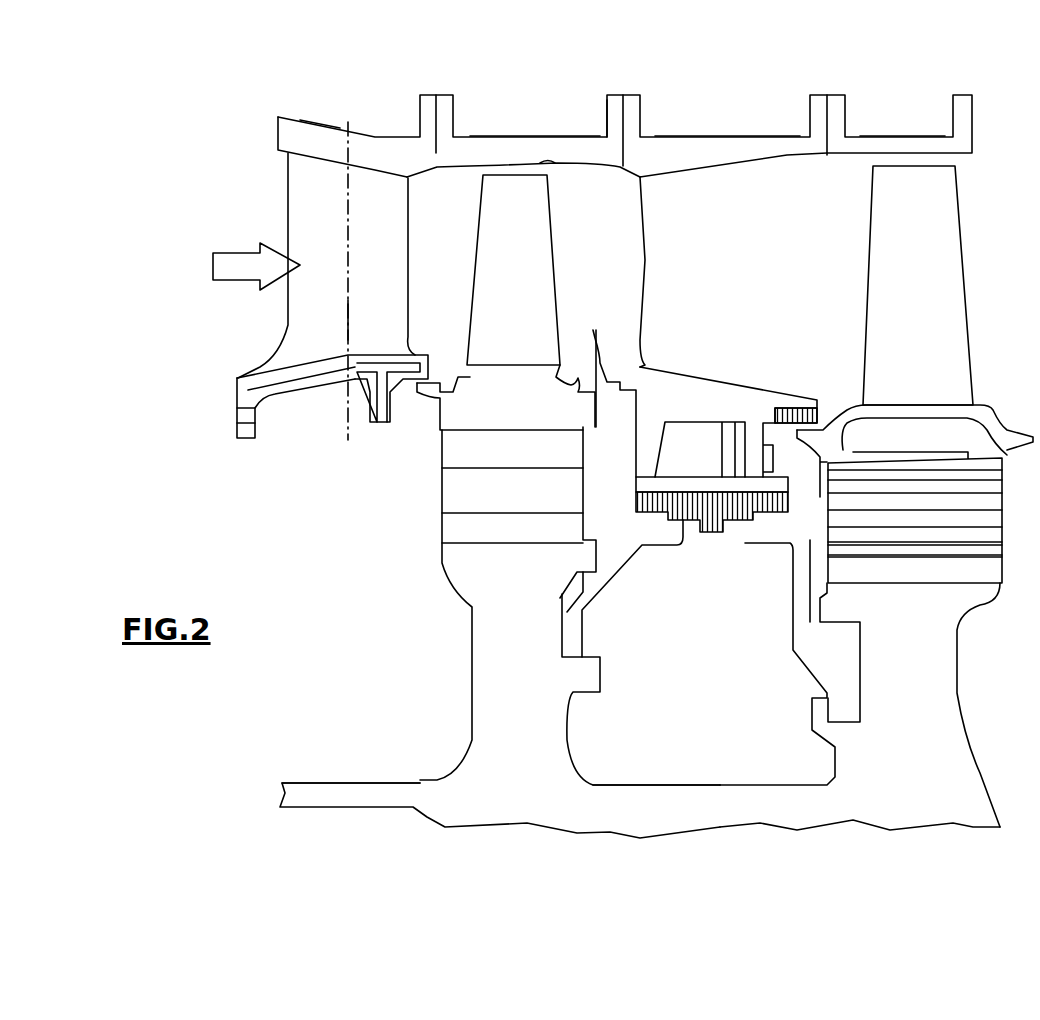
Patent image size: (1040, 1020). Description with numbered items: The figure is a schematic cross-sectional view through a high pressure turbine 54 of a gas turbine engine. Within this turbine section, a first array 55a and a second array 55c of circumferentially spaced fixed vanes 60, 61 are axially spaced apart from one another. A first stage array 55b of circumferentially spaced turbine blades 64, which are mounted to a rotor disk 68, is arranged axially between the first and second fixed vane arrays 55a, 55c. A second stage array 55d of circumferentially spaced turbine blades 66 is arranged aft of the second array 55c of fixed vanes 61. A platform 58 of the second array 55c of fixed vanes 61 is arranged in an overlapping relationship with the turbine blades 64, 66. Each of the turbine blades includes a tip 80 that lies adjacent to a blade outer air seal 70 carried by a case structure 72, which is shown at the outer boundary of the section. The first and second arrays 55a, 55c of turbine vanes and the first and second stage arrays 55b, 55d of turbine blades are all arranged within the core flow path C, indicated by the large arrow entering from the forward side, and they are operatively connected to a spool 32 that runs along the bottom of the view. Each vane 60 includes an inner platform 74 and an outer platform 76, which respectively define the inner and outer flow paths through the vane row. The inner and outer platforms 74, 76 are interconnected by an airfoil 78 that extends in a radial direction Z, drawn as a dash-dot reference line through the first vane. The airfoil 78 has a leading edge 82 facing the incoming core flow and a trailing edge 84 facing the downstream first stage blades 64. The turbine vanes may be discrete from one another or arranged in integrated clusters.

The spool 32 is at (272, 795).
The high pressure turbine 54 is at (752, 72).
The first array of fixed vanes 55a is at (340, 118).
The first stage array of turbine blades 55b is at (533, 130).
The second array of fixed vanes 55c is at (683, 130).
The second stage array of turbine blades 55d is at (895, 130).
The platform 58 is at (607, 382).
The fixed vane 60 is at (278, 236).
The fixed vane 61 is at (640, 222).
The turbine blade 64 is at (470, 243).
The turbine blade 66 is at (853, 252).
The rotor disk 68 is at (548, 722).
The blade outer air seal 70 is at (470, 152).
The case structure 72 is at (613, 116).
The inner platform 74 is at (303, 370).
The outer platform 76 is at (308, 148).
The airfoil 78 is at (366, 190).
The tip 80 is at (530, 170).
The leading edge 82 is at (288, 193).
The trailing edge 84 is at (408, 262).
The radial direction Z is at (348, 332).
The core flow path C is at (240, 273).